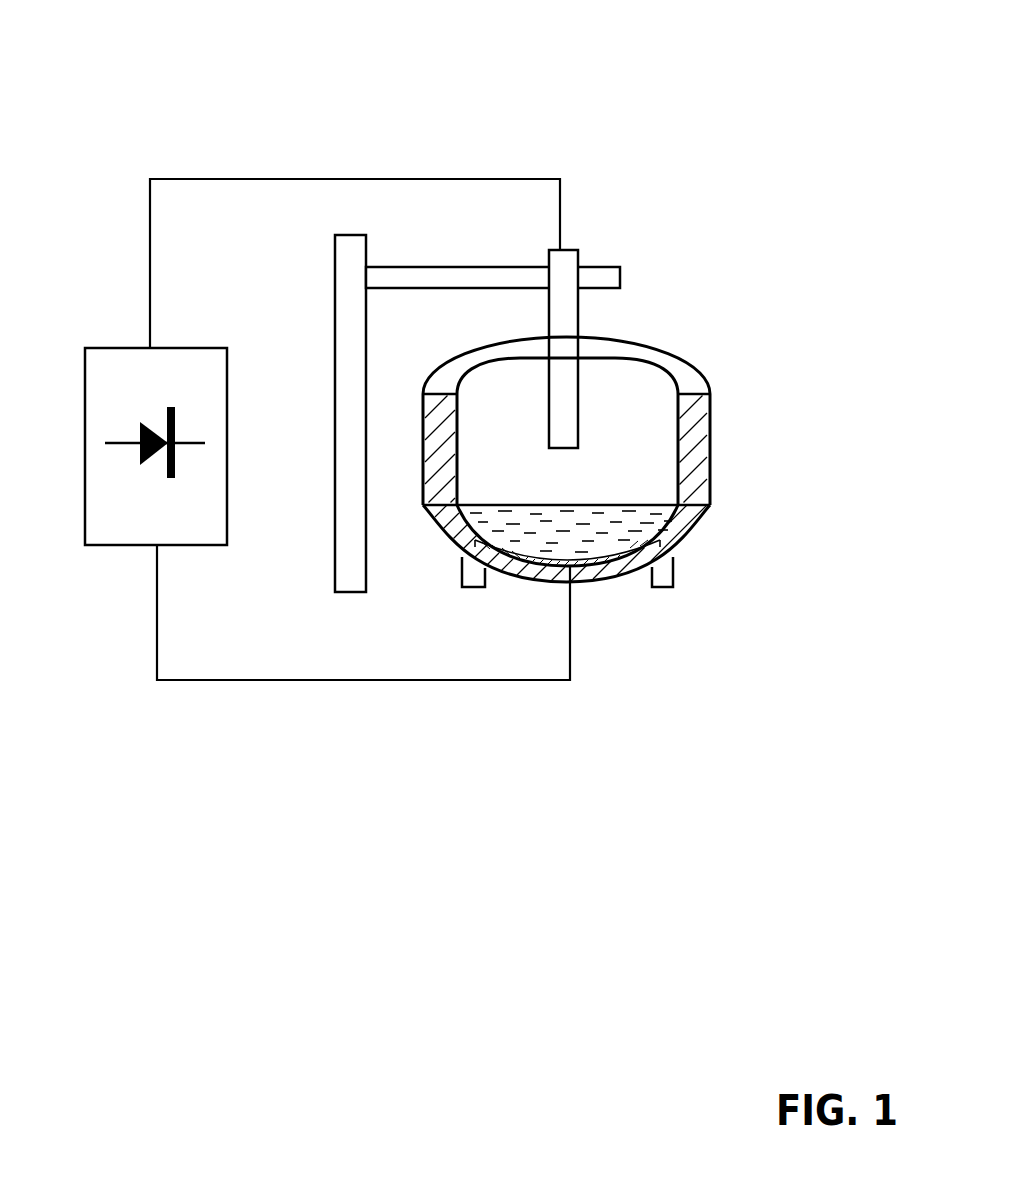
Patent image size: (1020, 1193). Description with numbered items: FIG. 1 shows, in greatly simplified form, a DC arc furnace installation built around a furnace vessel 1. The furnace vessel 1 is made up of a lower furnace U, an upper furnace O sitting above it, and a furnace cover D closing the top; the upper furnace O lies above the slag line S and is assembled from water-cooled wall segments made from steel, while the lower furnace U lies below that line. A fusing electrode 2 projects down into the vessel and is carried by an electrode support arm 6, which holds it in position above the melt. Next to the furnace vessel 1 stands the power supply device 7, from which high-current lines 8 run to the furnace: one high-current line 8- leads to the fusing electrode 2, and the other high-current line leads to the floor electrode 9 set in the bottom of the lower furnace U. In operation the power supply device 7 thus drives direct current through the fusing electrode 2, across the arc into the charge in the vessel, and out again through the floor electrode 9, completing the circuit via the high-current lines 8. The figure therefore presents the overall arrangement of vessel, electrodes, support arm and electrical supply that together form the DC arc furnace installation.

The furnace vessel 1 is at (428, 357).
The fusing electrode 2 is at (566, 319).
The electrode support arm 6 is at (452, 277).
The power supply device 7 is at (115, 545).
The high-current lines 8 is at (360, 427).
The high-current line 8- is at (264, 179).
The floor electrode 9 is at (608, 555).
The furnace cover D is at (647, 356).
The upper furnace O is at (688, 410).
The slag line S is at (627, 500).
The lower furnace U is at (683, 522).